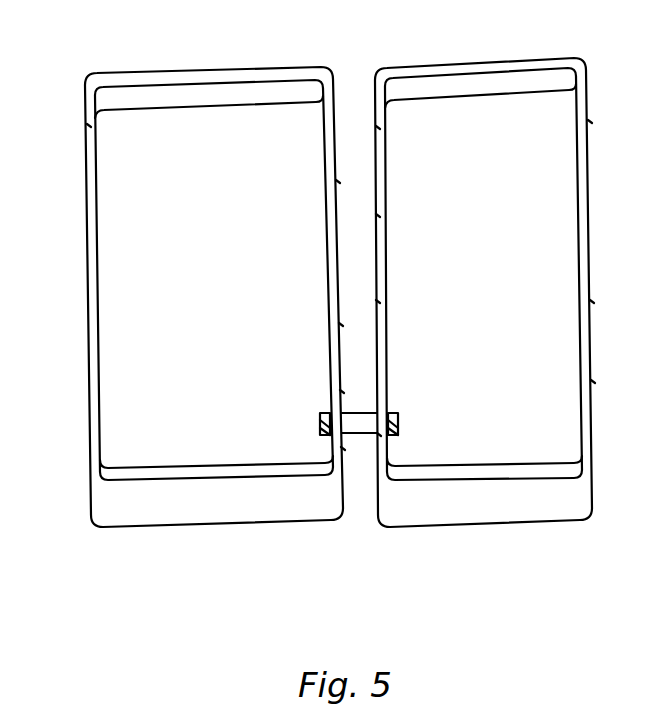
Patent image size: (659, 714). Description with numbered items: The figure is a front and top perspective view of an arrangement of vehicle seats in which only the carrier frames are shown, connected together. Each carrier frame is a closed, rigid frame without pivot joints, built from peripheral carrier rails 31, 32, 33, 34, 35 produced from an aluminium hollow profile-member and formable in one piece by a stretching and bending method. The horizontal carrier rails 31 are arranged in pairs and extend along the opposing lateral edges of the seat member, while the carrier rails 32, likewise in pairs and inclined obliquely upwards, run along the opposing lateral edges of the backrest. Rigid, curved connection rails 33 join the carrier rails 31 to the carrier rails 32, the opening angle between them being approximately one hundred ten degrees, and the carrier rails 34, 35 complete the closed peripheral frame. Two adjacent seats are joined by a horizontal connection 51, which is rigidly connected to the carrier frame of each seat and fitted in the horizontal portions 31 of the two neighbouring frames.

The carrier rail 31 is at (87, 430).
The carrier rail 32 is at (88, 232).
The connection rail 33 is at (87, 363).
The carrier rail 34 is at (210, 78).
The carrier rail 35 is at (212, 512).
The horizontal connection 51 is at (359, 430).